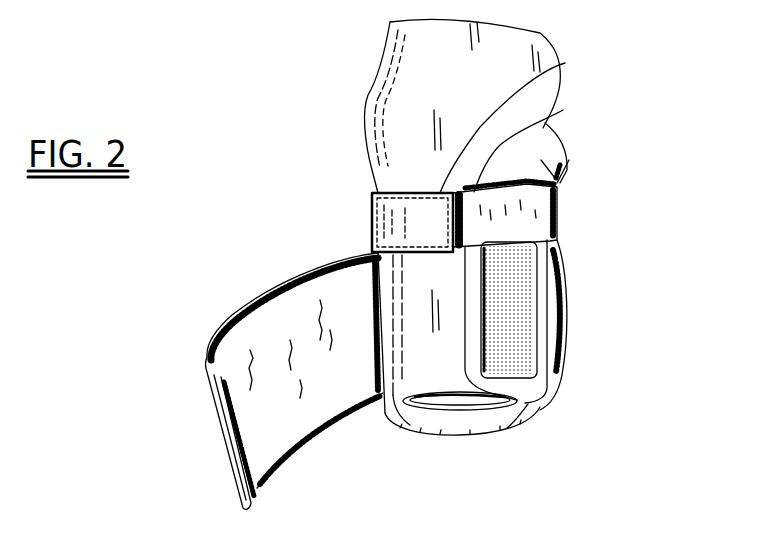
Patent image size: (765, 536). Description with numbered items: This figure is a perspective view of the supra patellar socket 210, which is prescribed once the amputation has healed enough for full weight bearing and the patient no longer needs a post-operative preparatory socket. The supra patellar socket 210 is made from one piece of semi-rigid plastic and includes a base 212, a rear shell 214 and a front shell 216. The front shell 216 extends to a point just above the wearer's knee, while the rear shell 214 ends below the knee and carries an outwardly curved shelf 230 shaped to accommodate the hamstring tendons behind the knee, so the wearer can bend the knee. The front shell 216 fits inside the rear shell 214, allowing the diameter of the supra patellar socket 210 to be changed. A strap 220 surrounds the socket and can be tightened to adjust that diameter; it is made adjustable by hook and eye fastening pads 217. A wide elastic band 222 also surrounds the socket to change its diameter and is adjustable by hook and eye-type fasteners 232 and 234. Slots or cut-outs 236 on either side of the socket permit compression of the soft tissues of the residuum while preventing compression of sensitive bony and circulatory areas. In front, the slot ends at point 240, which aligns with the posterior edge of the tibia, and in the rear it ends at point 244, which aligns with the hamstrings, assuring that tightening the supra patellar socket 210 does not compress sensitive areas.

The supra patellar socket 210 is at (609, 191).
The base 212 is at (507, 430).
The rear shell 214 is at (565, 270).
The front shell 216 is at (367, 105).
The hook and eye fastening pads 217 is at (565, 63).
The strap 220 is at (372, 200).
The wide elastic band 222 is at (208, 398).
The outwardly curved shelf 230 is at (563, 110).
The hook and eye-type fastener 232 is at (522, 323).
The hook and eye-type fastener 234 is at (290, 347).
The slots or cut-outs 236 is at (515, 430).
The front slot end point 240 is at (407, 422).
The rear slot end point 244 is at (537, 403).